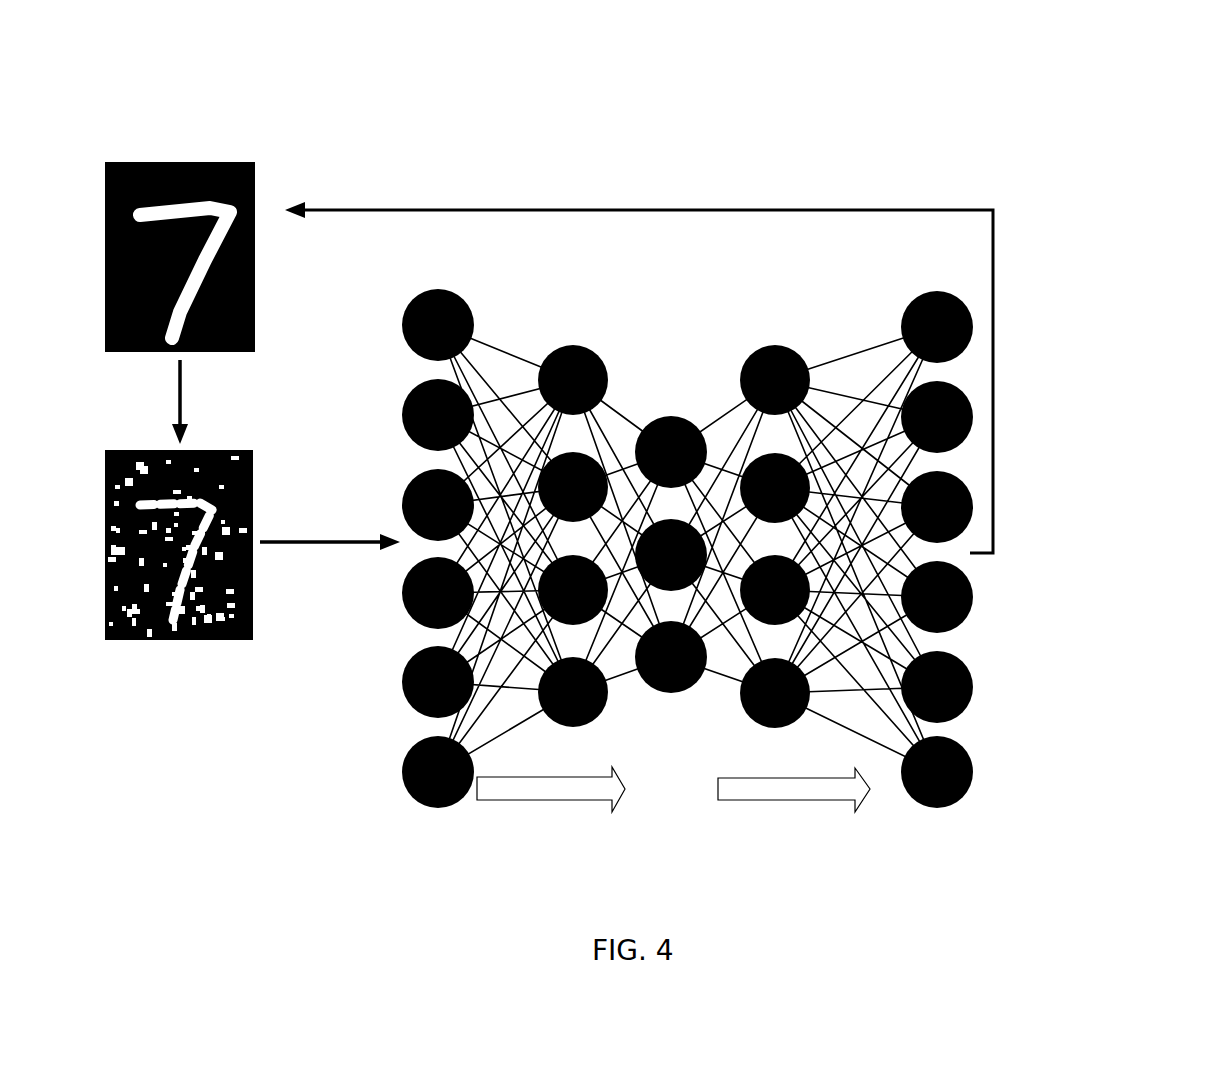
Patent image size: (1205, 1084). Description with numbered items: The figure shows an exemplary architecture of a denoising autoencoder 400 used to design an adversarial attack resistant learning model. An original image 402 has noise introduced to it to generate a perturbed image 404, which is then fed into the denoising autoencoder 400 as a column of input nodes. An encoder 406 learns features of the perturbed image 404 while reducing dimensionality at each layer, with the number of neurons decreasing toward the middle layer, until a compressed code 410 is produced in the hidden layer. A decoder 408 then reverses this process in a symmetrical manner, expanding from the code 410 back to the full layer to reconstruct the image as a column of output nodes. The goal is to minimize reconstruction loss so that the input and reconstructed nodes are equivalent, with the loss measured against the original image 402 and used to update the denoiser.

The denoising autoencoder 400 is at (1110, 102).
The original image 402 is at (170, 162).
The perturbed image 404 is at (200, 450).
The encoder 406 is at (553, 802).
The decoder 408 is at (795, 802).
The code 410 is at (652, 348).